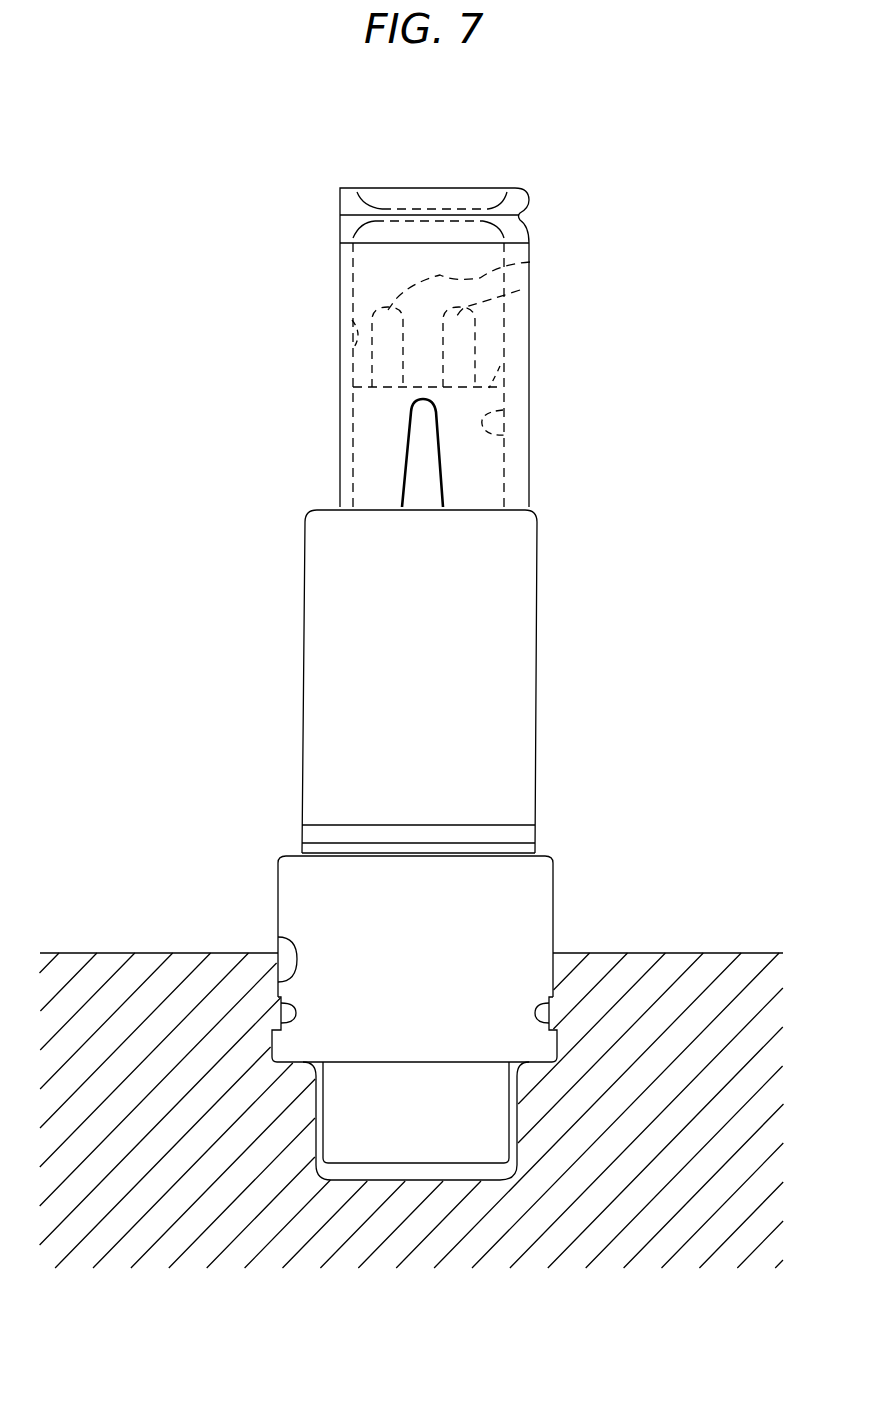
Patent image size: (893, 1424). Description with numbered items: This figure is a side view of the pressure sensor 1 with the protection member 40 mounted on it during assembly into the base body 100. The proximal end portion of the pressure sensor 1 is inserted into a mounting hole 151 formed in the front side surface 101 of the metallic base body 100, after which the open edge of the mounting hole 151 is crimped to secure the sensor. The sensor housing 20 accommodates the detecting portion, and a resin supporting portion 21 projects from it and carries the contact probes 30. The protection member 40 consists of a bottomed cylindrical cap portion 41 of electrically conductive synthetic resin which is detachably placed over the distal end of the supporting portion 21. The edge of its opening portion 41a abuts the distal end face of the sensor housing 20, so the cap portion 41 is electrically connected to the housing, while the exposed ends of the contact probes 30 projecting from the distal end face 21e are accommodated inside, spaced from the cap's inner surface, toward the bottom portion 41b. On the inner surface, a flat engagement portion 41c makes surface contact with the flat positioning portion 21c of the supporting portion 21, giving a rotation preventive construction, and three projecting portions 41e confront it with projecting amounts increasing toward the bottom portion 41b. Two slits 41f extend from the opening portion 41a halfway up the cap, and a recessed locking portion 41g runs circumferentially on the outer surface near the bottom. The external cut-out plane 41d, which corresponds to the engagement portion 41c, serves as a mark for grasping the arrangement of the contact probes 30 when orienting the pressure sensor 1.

The pressure sensor 1 is at (280, 728).
The sensor housing 20 is at (550, 689).
The supporting portion 21 is at (340, 410).
The positioning portion 21c is at (343, 447).
The distal end face 21e is at (500, 366).
The contact probes 30 is at (530, 262).
The protection member 40 is at (290, 213).
The cap portion 41 is at (540, 340).
The opening portion 41a is at (473, 510).
The bottom portion 41b is at (455, 188).
The engagement portion 41c is at (353, 347).
The cut-out plane 41d is at (340, 300).
The projecting portions 41e is at (507, 436).
The slits 41f is at (441, 450).
The locking portion 41g is at (525, 213).
The base body 100 is at (112, 946).
The front side surface 101 is at (687, 953).
The mounting hole 151 is at (278, 937).